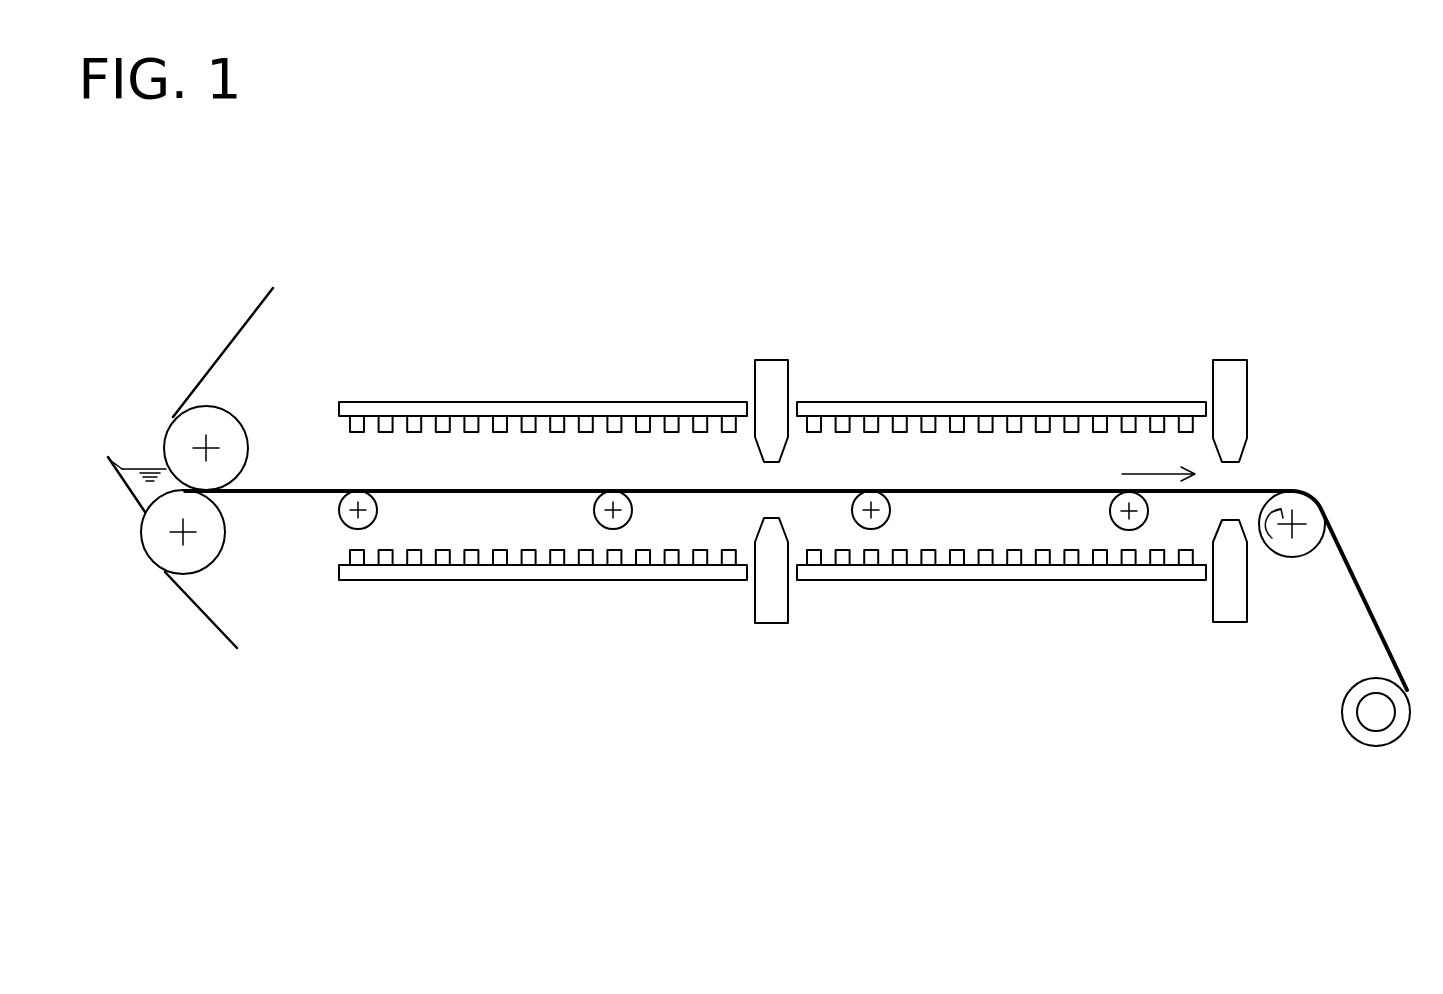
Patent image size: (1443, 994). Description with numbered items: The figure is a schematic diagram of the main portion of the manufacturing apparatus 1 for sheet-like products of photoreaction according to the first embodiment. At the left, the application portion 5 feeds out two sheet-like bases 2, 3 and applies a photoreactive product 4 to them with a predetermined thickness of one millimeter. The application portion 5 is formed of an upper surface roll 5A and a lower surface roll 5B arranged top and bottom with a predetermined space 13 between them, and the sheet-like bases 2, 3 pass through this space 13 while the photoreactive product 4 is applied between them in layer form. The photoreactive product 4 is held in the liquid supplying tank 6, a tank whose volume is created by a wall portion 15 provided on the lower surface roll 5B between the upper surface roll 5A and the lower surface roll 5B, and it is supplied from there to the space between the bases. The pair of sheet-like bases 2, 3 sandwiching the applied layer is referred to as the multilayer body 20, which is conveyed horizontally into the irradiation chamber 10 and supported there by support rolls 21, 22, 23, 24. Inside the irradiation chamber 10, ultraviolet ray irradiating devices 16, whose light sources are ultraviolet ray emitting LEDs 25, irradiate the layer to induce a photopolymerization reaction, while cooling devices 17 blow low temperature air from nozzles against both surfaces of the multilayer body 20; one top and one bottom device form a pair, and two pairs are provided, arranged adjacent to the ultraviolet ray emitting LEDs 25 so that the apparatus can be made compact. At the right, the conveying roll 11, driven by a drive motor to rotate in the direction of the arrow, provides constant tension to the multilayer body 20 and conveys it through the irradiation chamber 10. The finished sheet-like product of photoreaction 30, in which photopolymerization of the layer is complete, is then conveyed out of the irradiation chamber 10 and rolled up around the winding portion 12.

The manufacturing apparatus 1 is at (978, 258).
The sheet-like base 2 is at (242, 328).
The sheet-like base 3 is at (198, 617).
The photoreactive product 4 is at (125, 467).
The application portion 5 is at (221, 465).
The upper surface roll 5A is at (232, 430).
The lower surface roll 5B is at (208, 545).
The liquid supplying tank 6 is at (130, 497).
The irradiation chamber 10 is at (801, 492).
The conveying roll 11 is at (1310, 510).
The winding portion 12 is at (1387, 732).
The space 13 is at (210, 497).
The wall portion 15 is at (108, 463).
The ultraviolet ray irradiating device 16 is at (772, 492).
The cooling device 17 is at (782, 385).
The multilayer body 20 is at (297, 487).
The support roll 21 is at (343, 525).
The support roll 22 is at (626, 522).
The support roll 23 is at (884, 522).
The support roll 24 is at (1142, 522).
The ultraviolet ray emitting LED 25 is at (370, 422).
The sheet-like product of photoreaction 30 is at (1362, 582).